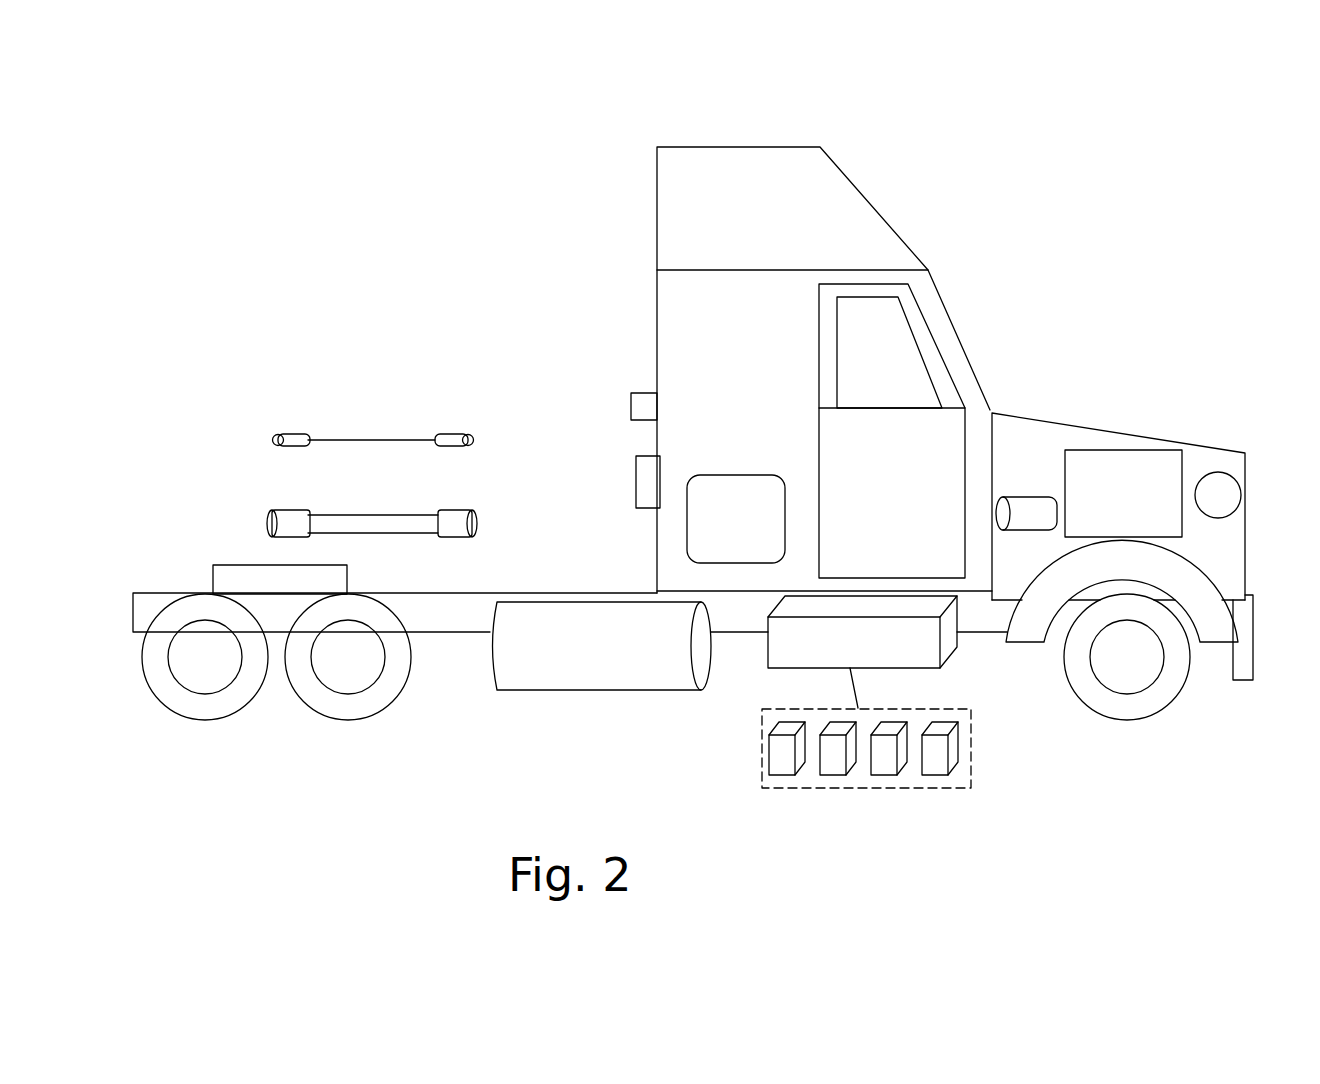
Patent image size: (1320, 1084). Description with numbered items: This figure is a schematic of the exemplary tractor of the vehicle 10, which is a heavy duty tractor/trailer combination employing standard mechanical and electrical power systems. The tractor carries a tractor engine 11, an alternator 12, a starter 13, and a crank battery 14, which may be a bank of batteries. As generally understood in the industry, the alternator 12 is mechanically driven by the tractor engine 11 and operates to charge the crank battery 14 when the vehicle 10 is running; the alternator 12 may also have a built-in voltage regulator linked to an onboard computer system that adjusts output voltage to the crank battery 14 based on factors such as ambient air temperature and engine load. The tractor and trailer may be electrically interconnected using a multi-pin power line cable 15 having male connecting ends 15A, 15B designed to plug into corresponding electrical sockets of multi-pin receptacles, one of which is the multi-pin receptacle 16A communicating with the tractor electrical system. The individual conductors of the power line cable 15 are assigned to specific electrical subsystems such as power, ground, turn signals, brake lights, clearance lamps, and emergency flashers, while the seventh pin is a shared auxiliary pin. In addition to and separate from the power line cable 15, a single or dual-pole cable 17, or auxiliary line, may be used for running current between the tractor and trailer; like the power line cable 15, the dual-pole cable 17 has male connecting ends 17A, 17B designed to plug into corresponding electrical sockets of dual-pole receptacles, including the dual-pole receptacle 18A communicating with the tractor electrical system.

The vehicle 10 is at (996, 198).
The tractor engine 11 is at (1110, 450).
The alternator 12 is at (1222, 470).
The starter 13 is at (1018, 497).
The crank battery 14 is at (971, 765).
The power line cable 15 is at (380, 440).
The male connecting end 15A is at (452, 433).
The male connecting end 15B is at (290, 435).
The multi-pin receptacle 16A is at (631, 412).
The dual-pole cable 17 is at (382, 515).
The male connecting end 17A is at (463, 512).
The male connecting end 17B is at (278, 512).
The dual-pole receptacle 18A is at (640, 487).